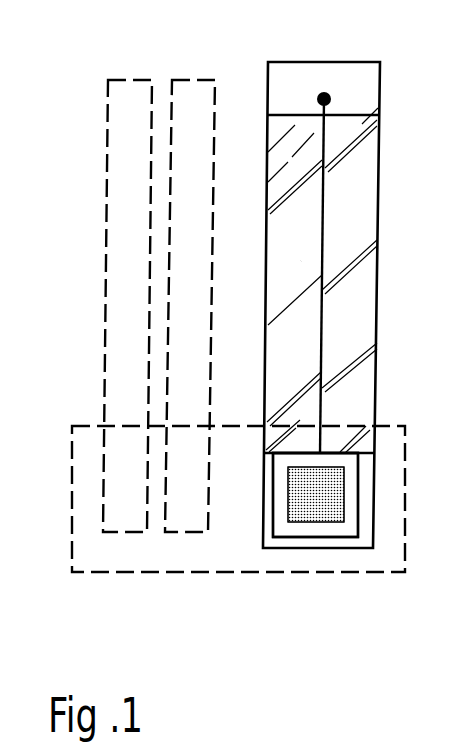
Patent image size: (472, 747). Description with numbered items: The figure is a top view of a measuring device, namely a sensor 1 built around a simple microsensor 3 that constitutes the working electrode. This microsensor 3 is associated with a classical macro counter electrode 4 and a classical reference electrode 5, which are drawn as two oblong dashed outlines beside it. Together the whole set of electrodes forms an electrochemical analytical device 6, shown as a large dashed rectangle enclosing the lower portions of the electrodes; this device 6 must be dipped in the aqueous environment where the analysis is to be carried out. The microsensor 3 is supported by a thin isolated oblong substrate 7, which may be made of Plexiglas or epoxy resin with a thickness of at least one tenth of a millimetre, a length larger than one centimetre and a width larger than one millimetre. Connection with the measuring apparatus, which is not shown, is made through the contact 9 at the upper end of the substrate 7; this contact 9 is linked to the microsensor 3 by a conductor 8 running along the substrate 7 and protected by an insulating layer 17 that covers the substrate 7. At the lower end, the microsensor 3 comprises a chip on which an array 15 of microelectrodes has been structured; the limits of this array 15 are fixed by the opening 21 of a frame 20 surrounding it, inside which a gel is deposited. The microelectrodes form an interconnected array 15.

The sensor 1 is at (353, 53).
The microsensor 3 is at (340, 448).
The counter electrode 4 is at (192, 96).
The reference electrode 5 is at (128, 96).
The electrochemical analytical device 6 is at (150, 563).
The substrate 7 is at (377, 243).
The conductor 8 is at (322, 190).
The contact 9 is at (331, 99).
The array of microelectrodes 15 is at (305, 510).
The insulating layer 17 is at (350, 315).
The frame 20 is at (343, 527).
The opening 21 is at (325, 493).